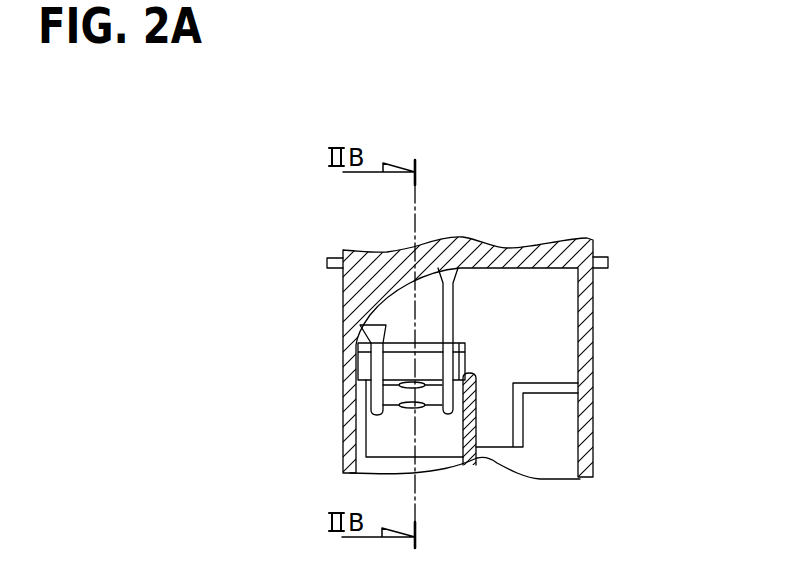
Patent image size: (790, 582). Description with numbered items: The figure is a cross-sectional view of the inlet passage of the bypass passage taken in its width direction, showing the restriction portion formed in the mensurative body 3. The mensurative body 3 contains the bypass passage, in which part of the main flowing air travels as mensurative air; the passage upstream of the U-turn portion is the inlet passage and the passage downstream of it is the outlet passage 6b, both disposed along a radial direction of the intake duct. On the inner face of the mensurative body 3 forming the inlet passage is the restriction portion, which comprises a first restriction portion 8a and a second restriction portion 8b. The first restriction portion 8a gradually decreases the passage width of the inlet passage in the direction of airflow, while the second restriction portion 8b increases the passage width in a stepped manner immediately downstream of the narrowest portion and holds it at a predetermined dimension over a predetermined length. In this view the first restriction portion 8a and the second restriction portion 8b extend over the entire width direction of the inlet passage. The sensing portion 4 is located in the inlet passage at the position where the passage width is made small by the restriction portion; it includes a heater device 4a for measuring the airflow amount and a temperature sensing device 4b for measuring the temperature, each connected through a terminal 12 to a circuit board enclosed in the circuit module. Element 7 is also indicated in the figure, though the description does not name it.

The mensurative body 3 is at (593, 247).
The terminal 12 is at (447, 320).
The second restriction portion 8b is at (363, 367).
The first restriction portion 8a is at (390, 447).
The sensing portion 4 is at (263, 395).
The heater device 4a is at (399, 386).
The temperature sensing device 4b is at (399, 405).
The outlet passage 6b is at (568, 458).
The base member 7 is at (475, 457).